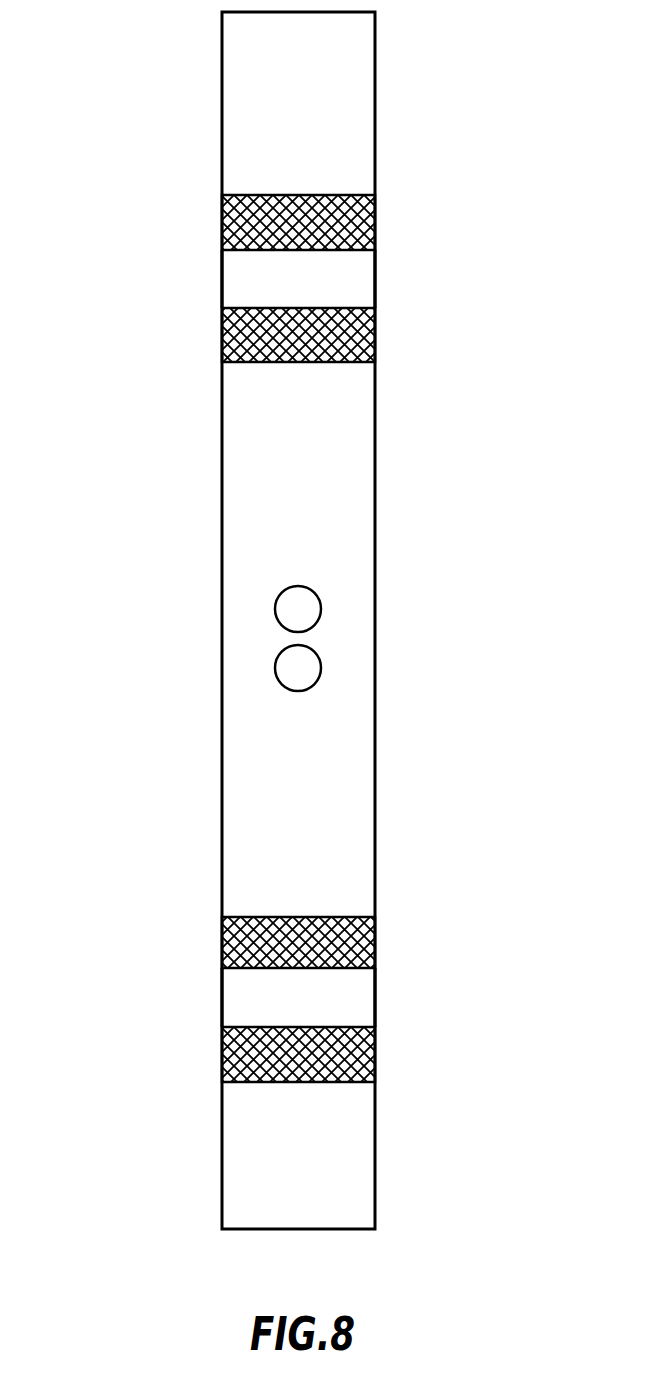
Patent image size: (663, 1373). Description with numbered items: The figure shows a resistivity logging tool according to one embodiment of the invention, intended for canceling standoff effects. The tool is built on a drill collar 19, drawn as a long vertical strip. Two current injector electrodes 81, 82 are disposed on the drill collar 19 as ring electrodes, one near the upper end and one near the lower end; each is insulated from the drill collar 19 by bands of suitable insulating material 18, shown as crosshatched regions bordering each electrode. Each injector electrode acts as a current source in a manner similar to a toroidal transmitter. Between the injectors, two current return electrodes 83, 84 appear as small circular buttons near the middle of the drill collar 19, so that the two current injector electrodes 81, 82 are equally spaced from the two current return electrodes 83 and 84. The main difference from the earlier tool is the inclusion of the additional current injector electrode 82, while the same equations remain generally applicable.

The drill collar 19 is at (315, 118).
The insulating material 18 is at (222, 223).
The current injector electrode 81 is at (352, 277).
The current injector electrode 82 is at (352, 995).
The current return electrode 83 is at (321, 606).
The current return electrode 84 is at (321, 667).